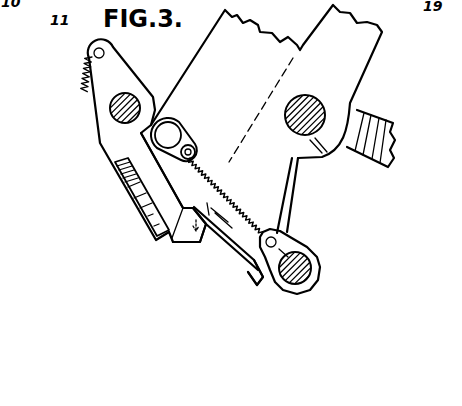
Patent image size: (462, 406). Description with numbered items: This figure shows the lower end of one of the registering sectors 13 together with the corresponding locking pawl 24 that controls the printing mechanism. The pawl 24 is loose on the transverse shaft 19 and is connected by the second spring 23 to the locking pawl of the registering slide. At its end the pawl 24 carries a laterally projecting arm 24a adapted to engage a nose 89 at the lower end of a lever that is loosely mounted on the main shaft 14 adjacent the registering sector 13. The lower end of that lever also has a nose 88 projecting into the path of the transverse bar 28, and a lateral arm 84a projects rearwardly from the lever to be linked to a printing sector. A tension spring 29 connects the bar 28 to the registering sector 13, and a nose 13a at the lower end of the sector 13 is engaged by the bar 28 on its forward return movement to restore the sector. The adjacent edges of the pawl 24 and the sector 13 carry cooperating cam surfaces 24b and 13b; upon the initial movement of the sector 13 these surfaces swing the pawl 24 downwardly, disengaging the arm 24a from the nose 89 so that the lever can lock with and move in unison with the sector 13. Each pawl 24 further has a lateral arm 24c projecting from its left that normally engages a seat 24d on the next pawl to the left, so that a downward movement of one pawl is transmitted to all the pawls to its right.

The registering sector 13 is at (242, 47).
The nose 13a is at (250, 272).
The cam surface 13b is at (172, 192).
The main shaft 14 is at (327, 157).
The transverse shaft 19 is at (110, 113).
The second spring 23 is at (82, 68).
The pawl 24 is at (120, 75).
The laterally projecting arm 24a is at (207, 245).
The cam surface 24b is at (182, 230).
The lateral arm 24c is at (117, 167).
The seat 24d is at (157, 235).
The transverse bar 28 is at (312, 258).
The tension spring 29 is at (255, 210).
The lateral arm 84a is at (393, 120).
The nose 88 is at (318, 273).
The nose 89 is at (195, 243).